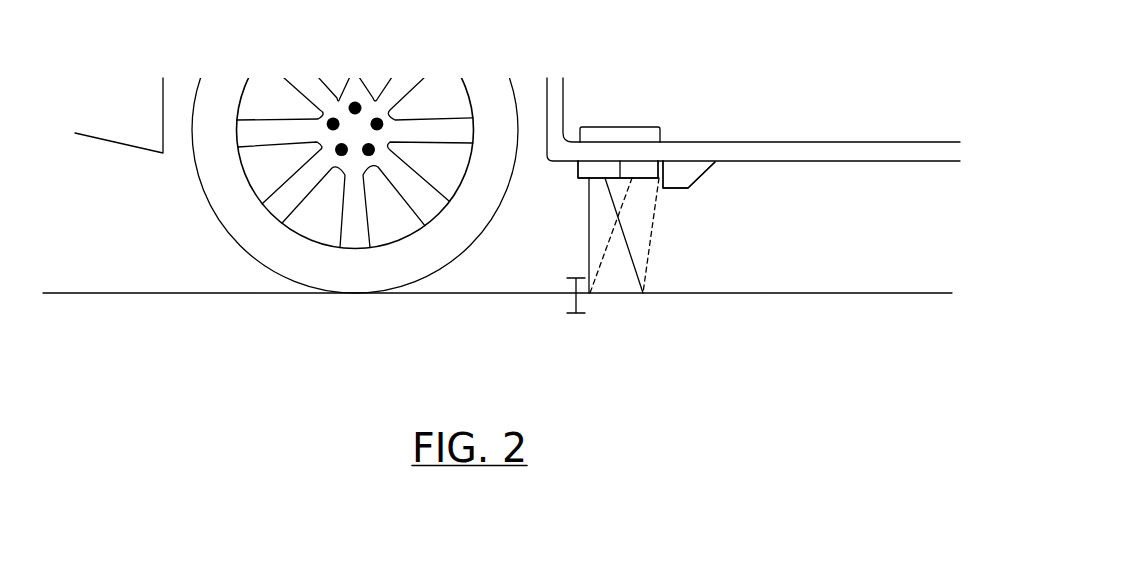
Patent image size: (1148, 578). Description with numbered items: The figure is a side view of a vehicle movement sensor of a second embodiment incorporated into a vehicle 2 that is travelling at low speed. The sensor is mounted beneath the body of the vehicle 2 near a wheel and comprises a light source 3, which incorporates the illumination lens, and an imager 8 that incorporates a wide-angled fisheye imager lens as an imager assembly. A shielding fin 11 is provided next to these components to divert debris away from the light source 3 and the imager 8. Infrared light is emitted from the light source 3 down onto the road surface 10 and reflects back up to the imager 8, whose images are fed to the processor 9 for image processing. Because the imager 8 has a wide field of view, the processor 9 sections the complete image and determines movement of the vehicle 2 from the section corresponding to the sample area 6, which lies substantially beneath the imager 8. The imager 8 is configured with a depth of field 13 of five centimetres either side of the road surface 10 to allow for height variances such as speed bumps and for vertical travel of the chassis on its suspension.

The vehicle 2 is at (557, 103).
The light source 3 is at (655, 167).
The sample area 6 is at (617, 291).
The imager 8 is at (578, 178).
The processor 9 is at (647, 124).
The road surface 10 is at (155, 292).
The shielding fin 11 is at (685, 180).
The depth of field 13 is at (572, 298).